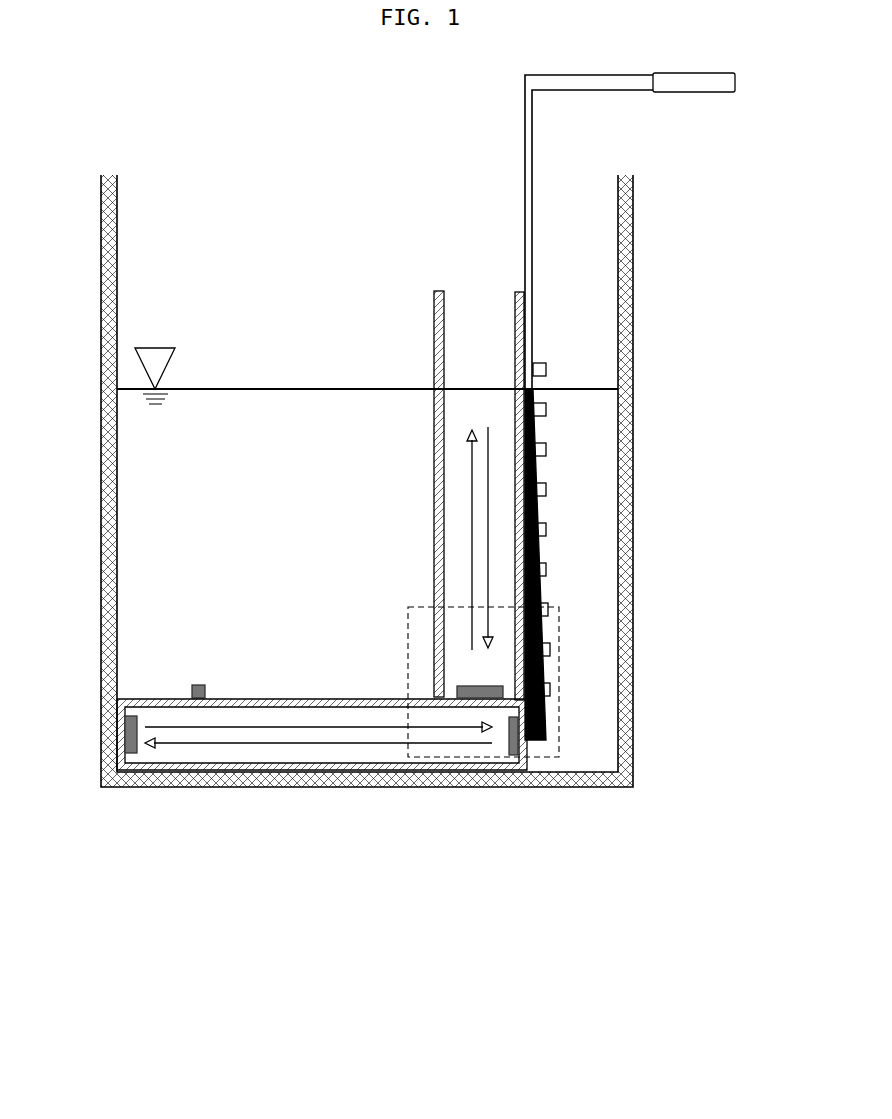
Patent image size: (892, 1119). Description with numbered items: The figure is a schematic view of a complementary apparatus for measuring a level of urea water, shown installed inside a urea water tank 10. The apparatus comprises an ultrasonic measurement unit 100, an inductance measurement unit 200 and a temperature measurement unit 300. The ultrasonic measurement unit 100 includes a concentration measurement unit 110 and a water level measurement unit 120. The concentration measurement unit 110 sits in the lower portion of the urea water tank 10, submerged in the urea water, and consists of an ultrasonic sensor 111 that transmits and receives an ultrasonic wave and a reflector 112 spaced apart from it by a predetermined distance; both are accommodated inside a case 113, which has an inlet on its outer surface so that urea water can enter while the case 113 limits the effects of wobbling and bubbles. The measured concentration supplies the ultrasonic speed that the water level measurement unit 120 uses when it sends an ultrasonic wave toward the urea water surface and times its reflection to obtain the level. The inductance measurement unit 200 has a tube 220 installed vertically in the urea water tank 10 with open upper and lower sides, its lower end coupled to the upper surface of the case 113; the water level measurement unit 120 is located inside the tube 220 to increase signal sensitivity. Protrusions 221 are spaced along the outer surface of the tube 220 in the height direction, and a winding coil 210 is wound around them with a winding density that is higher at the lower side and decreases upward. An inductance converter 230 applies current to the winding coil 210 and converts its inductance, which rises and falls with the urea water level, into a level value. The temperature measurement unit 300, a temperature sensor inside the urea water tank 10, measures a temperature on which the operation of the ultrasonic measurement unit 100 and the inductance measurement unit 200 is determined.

The urea water tank 10 is at (630, 754).
The ultrasonic measurement unit 100 is at (341, 868).
The concentration measurement unit 110 is at (318, 847).
The ultrasonic sensor 111 is at (123, 787).
The reflector 112 is at (508, 755).
The case 113 is at (280, 787).
The water level measurement unit 120 is at (503, 693).
The inductance measurement unit 200 is at (671, 406).
The winding coil 210 is at (546, 718).
The tube 220 is at (625, 514).
The protrusions 221 is at (548, 532).
The inductance converter 230 is at (680, 93).
The temperature measurement unit 300 is at (192, 692).